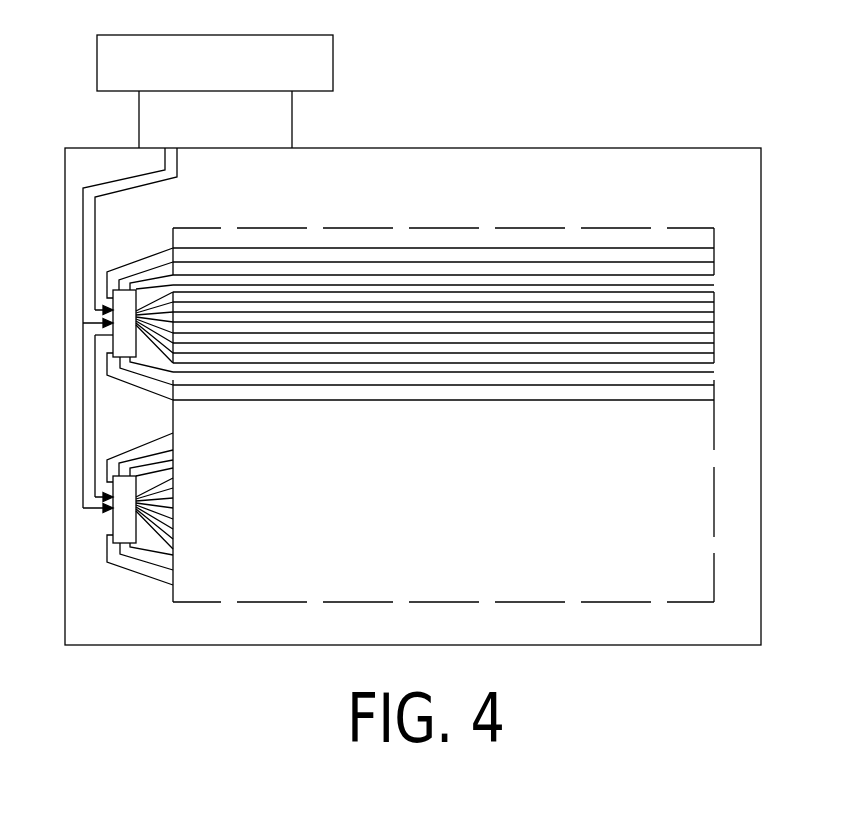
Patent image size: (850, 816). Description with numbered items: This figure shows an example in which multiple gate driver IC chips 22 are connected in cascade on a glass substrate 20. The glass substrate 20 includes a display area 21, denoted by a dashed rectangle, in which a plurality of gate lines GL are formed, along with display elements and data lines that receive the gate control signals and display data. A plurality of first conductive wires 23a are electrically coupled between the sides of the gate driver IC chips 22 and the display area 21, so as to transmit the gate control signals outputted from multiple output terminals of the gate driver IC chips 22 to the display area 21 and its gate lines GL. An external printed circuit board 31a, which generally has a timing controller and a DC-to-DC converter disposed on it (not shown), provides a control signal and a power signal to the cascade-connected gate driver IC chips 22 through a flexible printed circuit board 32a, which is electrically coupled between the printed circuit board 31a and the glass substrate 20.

The glass substrate 20 is at (467, 203).
The display area 21 is at (761, 417).
The gate driver IC chips 22 is at (125, 290).
The first conductive wires 23a is at (160, 252).
The printed circuit board 31a is at (333, 63).
The flexible printed circuit board 32a is at (292, 119).
The gate lines GL is at (748, 408).